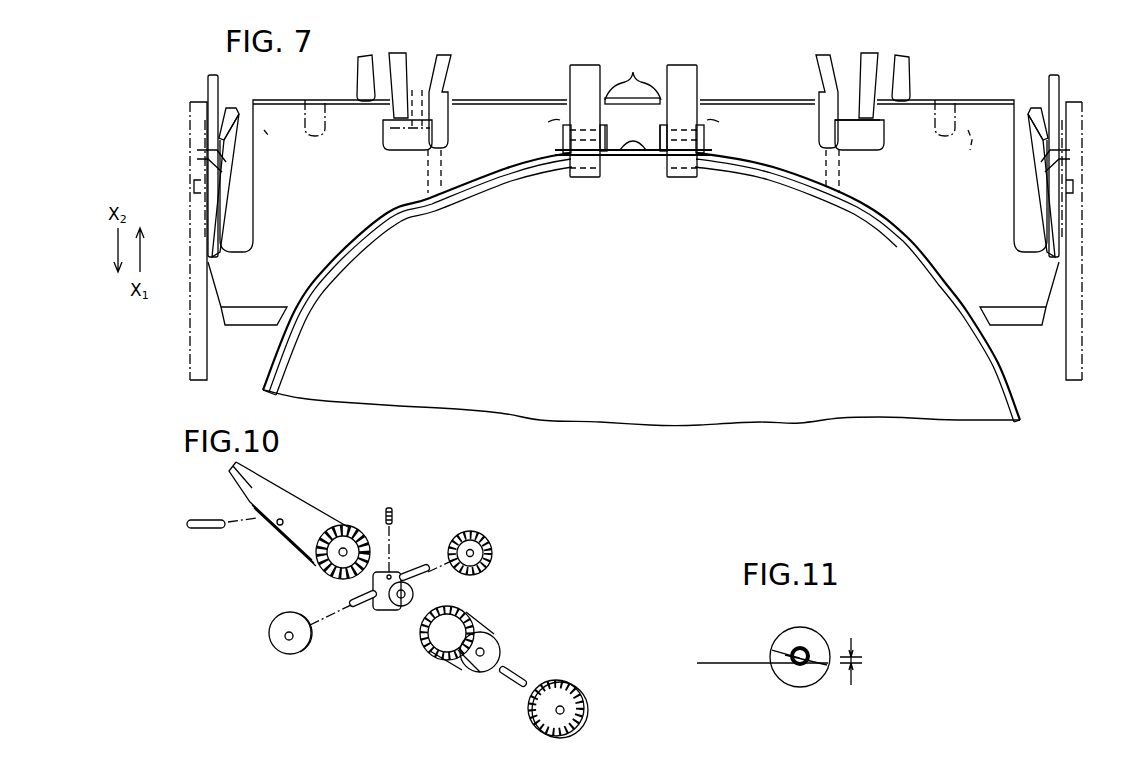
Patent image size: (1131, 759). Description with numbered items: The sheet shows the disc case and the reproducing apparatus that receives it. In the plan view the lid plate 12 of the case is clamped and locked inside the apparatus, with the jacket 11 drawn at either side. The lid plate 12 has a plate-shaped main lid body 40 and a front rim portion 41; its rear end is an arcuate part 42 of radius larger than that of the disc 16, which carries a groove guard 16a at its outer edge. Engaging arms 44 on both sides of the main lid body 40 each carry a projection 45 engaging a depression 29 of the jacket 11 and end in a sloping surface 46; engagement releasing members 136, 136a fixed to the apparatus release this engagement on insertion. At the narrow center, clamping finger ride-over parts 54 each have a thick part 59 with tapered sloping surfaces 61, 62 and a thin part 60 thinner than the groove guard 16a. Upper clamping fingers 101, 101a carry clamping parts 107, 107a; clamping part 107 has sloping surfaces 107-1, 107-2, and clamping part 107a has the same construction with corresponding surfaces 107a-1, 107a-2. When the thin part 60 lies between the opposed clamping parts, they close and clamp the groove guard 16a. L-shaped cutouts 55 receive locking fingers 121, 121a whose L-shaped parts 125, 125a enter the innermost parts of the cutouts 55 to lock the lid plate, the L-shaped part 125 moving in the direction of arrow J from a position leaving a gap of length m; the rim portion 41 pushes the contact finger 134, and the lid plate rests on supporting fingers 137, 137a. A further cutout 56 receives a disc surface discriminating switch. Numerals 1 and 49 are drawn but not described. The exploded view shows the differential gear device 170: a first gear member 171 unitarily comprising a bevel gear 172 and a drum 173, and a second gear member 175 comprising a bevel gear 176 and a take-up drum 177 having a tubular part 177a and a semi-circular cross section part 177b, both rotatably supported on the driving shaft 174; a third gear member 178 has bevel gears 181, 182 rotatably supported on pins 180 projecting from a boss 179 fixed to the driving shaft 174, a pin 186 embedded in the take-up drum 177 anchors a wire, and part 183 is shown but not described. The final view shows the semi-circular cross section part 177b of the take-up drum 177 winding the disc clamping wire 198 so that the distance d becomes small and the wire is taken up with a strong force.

In FIG. 7, the camera body 1 is at (275, 142).
In FIG. 7, the jacket 11 is at (190, 318).
In FIG. 7, the lid plate 12 is at (748, 91).
In FIG. 7, the disc 16 is at (970, 424).
In FIG. 7, the groove guard 16a is at (962, 316).
In FIG. 7, the depression 29 is at (194, 186).
In FIG. 7, the main lid body 40 is at (376, 228).
In FIG. 7, the rim portion 41 is at (508, 100).
In FIG. 7, the arcuate part 42 is at (905, 248).
In FIG. 7, the engaging arm 44 is at (226, 155).
In FIG. 7, the projection 45 is at (197, 155).
In FIG. 7, the sloping surface 46 is at (232, 108).
In FIG. 7, the recess 49 is at (276, 133).
In FIG. 7, the clamping finger ride-over part 54 is at (563, 136).
In FIG. 7, the L-shaped cutout 55 is at (398, 150).
In FIG. 7, the cutout 56 is at (962, 140).
In FIG. 7, the thick part 59 is at (548, 122).
In FIG. 7, the thin part 60 is at (604, 152).
In FIG. 7, the sloping surface 61 is at (633, 76).
In FIG. 7, the sloping surface 62 is at (660, 128).
In FIG. 7, the upper clamping finger 101 is at (568, 63).
In FIG. 7, the upper clamping finger 101a is at (699, 63).
In FIG. 7, the clamping part 107 is at (566, 160).
In FIG. 7, the sloping surface 107-1 is at (583, 180).
In FIG. 7, the sloping surface 107-2 is at (560, 150).
In FIG. 7, the clamping part 107a is at (699, 160).
In FIG. 7, the right slider lower portion 107a-1 is at (681, 180).
In FIG. 7, the right slider upper portion 107a-2 is at (706, 150).
In FIG. 7, the locking finger 121 is at (395, 64).
In FIG. 7, the locking finger 121a is at (870, 64).
In FIG. 7, the L-shaped part 125 is at (384, 126).
In FIG. 7, the L-shaped part 125a is at (880, 128).
In FIG. 7, the contact finger 134 is at (360, 72).
In FIG. 7, the engagement releasing member 136 is at (208, 86).
In FIG. 7, the engagement releasing member 136a is at (1060, 80).
In FIG. 7, the supporting finger 137 is at (446, 88).
In FIG. 7, the supporting finger 137a is at (818, 88).
In FIG. 10, the differential gear device 170 is at (446, 478).
In FIG. 10, the first gear member 171 is at (484, 706).
In FIG. 10, the bevel gear 172 is at (430, 656).
In FIG. 10, the drum 173 is at (466, 664).
In FIG. 10, the driving shaft 174 is at (528, 678).
In FIG. 10, the second gear member 175 is at (406, 438).
In FIG. 10, the bevel gear 176 is at (352, 500).
In FIG. 10, the take-up drum 177 is at (372, 462).
In FIG. 11, the take-up drum 177 is at (776, 624).
In FIG. 10, the tubular part 177a is at (318, 520).
In FIG. 10, the semi-circular cross section part 177b is at (270, 472).
In FIG. 11, the semi-circular cross section part 177b is at (814, 637).
In FIG. 10, the third gear member 178 is at (268, 600).
In FIG. 10, the boss 179 is at (413, 594).
In FIG. 10, the pin 180 is at (365, 606).
In FIG. 10, the bevel gear 181 is at (300, 652).
In FIG. 10, the bevel gear 182 is at (480, 538).
In FIG. 10, the screw 183 is at (392, 516).
In FIG. 10, the pin 186 is at (198, 518).
In FIG. 11, the disc clamping wire 198 is at (740, 664).
In FIG. 7, the arrow J is at (396, 142).
In FIG. 7, the gap length m is at (426, 137).
In FIG. 11, the distance d is at (862, 660).